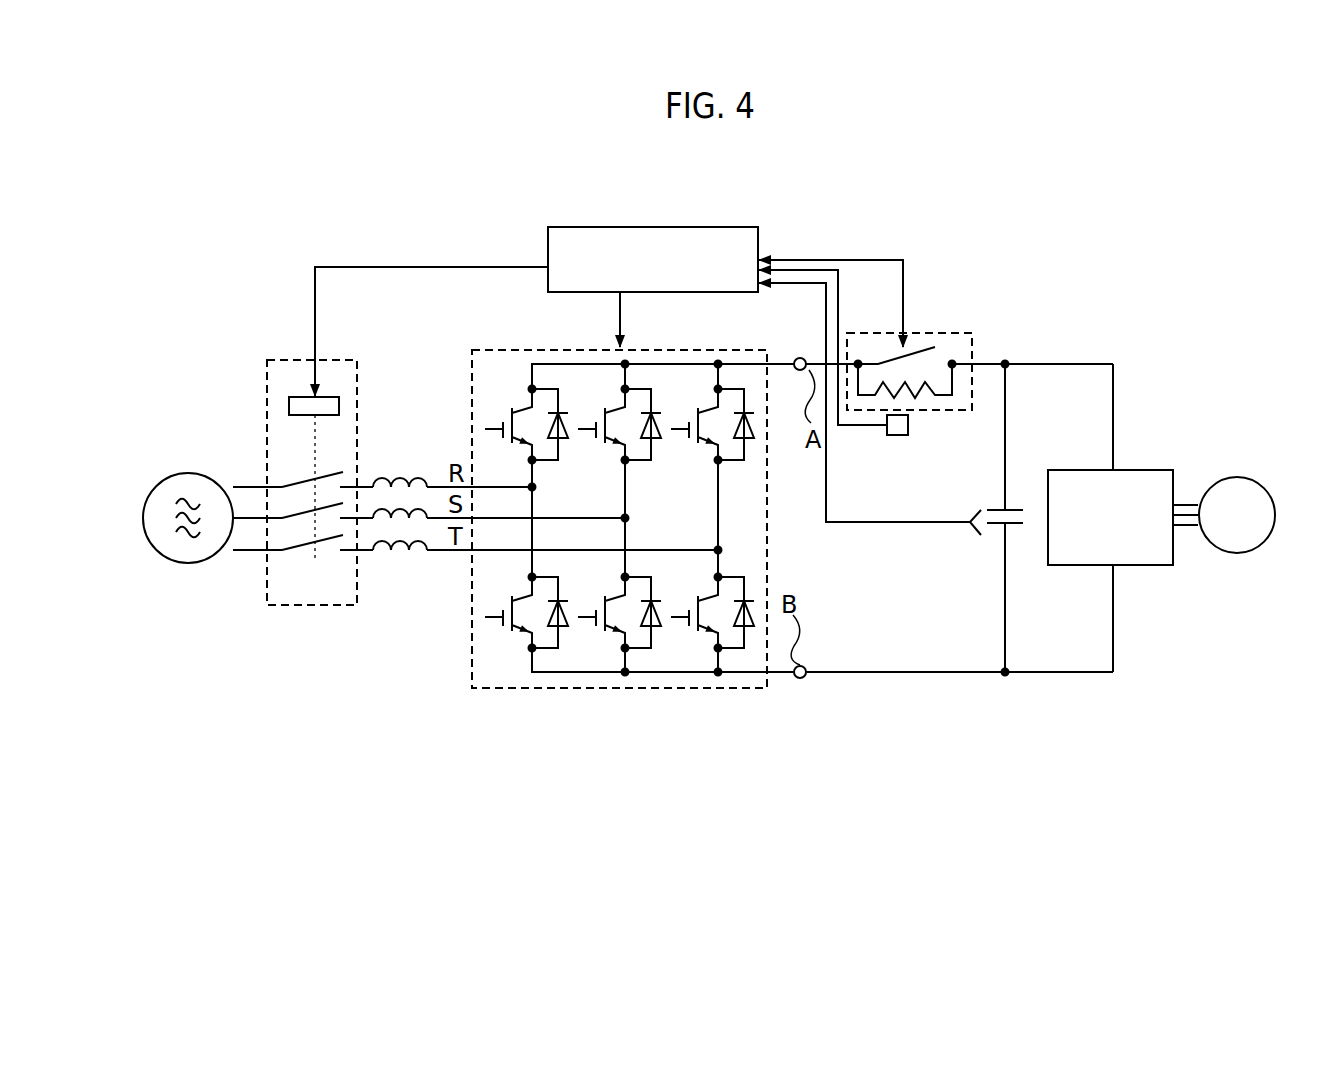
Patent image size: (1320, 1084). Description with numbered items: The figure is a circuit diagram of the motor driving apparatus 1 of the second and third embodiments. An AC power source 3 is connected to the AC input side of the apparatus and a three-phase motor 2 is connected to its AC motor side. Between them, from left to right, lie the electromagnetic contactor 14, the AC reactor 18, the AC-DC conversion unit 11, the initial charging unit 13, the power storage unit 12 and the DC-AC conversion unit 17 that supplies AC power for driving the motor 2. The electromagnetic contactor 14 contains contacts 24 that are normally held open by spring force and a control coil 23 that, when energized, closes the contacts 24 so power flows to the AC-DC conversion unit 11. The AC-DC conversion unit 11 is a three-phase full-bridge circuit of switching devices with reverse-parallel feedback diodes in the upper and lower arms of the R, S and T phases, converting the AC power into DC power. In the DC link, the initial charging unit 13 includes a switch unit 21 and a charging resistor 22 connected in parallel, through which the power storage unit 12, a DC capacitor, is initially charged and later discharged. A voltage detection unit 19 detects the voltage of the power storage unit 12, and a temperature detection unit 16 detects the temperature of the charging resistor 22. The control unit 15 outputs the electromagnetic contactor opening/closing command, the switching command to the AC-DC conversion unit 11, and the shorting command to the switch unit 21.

The motor driving apparatus 1 is at (767, 787).
The motor 2 is at (1233, 477).
The AC power source 3 is at (175, 475).
The AC-DC conversion unit 11 is at (540, 692).
The power storage unit 12 is at (1022, 496).
The initial charging unit 13 is at (921, 363).
The electromagnetic contactor 14 is at (296, 506).
The control unit 15 is at (638, 227).
The temperature detection unit 16 is at (893, 435).
The DC-AC conversion unit 17 is at (1142, 468).
The AC reactor 18 is at (400, 446).
The voltage detection unit 19 is at (976, 530).
The switch unit 21 is at (888, 360).
The charging resistor 22 is at (923, 393).
The control coil 23 is at (305, 397).
The contacts 24 is at (296, 477).